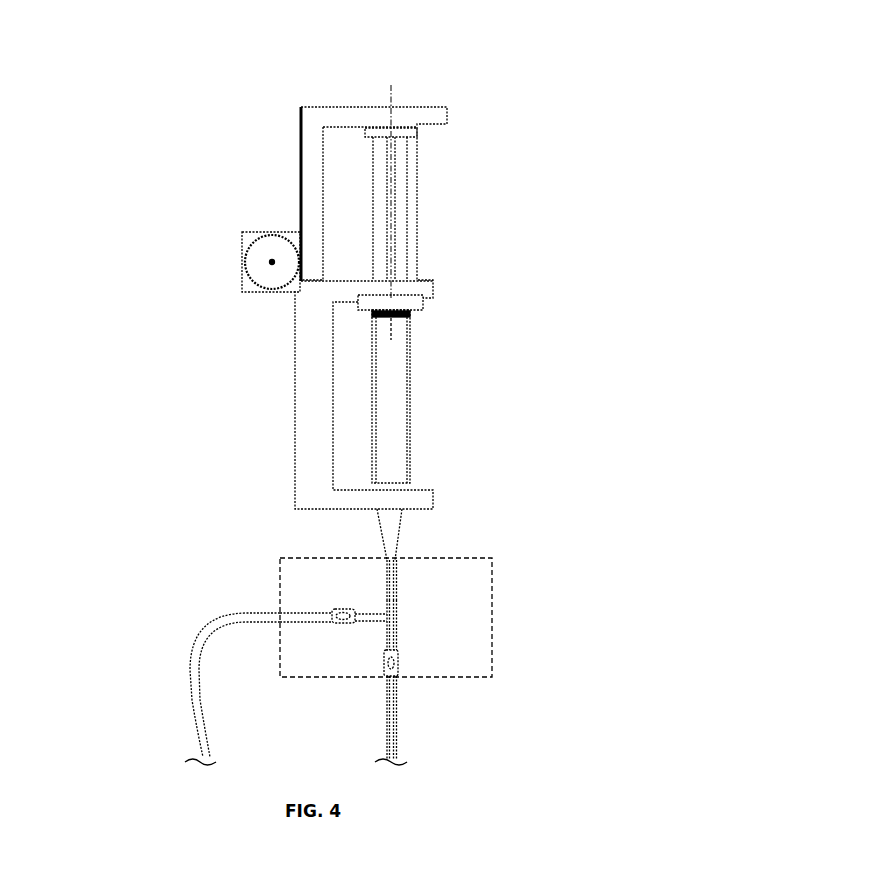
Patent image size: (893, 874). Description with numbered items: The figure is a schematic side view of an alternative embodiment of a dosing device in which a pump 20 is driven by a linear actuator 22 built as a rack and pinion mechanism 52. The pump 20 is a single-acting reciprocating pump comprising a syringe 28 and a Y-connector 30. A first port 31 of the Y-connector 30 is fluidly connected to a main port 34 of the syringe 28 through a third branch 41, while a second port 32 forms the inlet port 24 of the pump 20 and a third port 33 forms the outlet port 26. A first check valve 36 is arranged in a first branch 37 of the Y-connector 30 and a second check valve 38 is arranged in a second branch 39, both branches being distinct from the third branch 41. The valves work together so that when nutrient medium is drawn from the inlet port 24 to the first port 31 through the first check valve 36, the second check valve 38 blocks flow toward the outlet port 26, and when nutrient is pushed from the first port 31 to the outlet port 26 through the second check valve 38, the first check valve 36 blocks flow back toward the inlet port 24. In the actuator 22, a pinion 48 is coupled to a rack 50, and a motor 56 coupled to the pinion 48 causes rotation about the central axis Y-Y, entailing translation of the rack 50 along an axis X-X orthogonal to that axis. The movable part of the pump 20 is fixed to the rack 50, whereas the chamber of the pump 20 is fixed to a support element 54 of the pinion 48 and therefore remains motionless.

The pump 20 is at (478, 178).
The actuator 22 is at (140, 233).
The inlet port 24 is at (278, 613).
The outlet port 26 is at (388, 676).
The syringe 28 is at (410, 470).
The Y-connector 30 is at (277, 572).
The first port 31 is at (387, 558).
The second port 32 is at (232, 689).
The third port 33 is at (391, 720).
The main port 34 is at (395, 545).
The first check valve 36 is at (342, 624).
The first branch 37 is at (332, 590).
The second check valve 38 is at (400, 665).
The second branch 39 is at (458, 630).
The third branch 41 is at (447, 588).
The pinion 48 is at (245, 248).
The rack 50 is at (300, 185).
The rack and pinion mechanism 52 is at (185, 183).
The support element 54 is at (295, 412).
The motor 56 is at (242, 283).